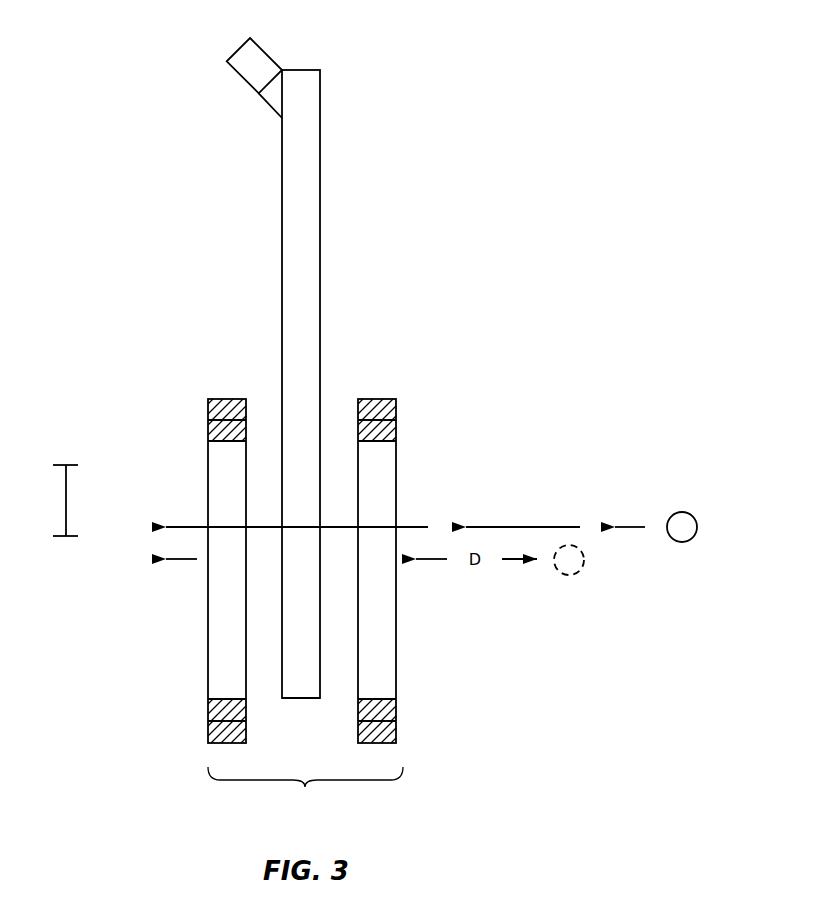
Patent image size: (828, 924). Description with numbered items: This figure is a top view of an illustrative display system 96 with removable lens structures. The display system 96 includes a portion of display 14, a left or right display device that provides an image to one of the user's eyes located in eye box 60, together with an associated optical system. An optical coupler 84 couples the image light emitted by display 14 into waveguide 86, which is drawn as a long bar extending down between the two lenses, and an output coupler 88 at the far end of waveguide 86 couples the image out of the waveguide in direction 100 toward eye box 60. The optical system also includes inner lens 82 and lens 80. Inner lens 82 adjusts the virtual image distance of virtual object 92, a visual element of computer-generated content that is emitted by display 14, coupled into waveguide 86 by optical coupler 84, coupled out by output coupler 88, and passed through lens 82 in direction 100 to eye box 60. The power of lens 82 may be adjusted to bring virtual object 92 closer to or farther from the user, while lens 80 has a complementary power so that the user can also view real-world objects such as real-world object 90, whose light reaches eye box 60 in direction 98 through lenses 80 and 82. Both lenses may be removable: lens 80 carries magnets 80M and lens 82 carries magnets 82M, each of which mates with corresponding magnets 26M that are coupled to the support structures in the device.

The display 14 is at (262, 46).
The optical coupler 84 is at (266, 104).
The waveguide 86 is at (307, 212).
The output coupler 88 is at (305, 692).
The inner lens 82 is at (218, 644).
The lens 80 is at (387, 643).
The magnets 26M is at (231, 401).
The magnets 80M is at (393, 428).
The magnets 82M is at (212, 428).
The display system 96 is at (305, 792).
The direction 98 is at (412, 525).
The direction 100 is at (182, 563).
The real-world object 90 is at (682, 543).
The virtual object 92 is at (572, 576).
The eye box 60 is at (63, 537).